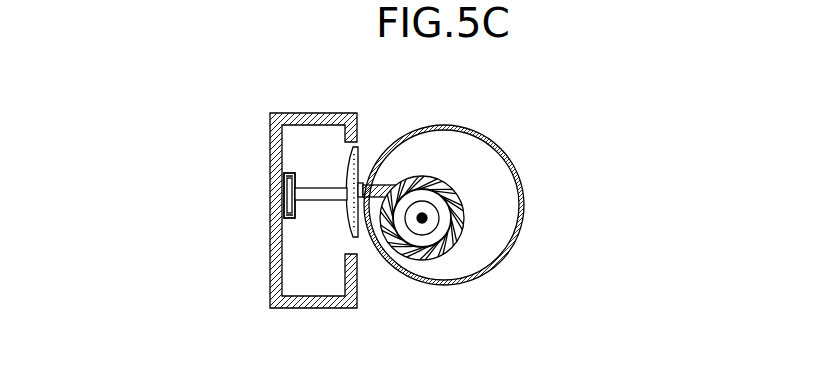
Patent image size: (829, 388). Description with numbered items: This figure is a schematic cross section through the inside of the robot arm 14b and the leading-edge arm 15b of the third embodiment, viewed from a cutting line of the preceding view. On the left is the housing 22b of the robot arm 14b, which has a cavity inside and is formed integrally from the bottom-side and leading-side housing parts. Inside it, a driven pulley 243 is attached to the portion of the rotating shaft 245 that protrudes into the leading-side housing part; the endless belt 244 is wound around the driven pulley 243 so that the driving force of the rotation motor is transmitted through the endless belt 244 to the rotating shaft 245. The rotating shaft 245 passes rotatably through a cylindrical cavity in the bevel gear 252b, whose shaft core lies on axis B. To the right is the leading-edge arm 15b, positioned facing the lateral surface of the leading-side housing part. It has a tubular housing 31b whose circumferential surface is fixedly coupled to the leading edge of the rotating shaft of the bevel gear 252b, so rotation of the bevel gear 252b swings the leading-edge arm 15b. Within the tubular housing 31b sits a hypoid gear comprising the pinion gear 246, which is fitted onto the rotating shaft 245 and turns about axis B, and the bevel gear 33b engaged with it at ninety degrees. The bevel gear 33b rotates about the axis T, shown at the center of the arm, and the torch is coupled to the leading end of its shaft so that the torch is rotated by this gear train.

The leading-edge arm 15b is at (143, 145).
The housing 22b is at (307, 113).
The bevel gear 252b is at (347, 163).
The driven pulley 243 is at (290, 188).
The endless belt 244 is at (290, 220).
The rotating shaft 245 is at (318, 200).
The pinion gear 246 is at (383, 187).
The robot arm 14b is at (534, 119).
The tubular housing 31b is at (523, 212).
The bevel gear 33b is at (423, 261).
The axis T is at (422, 218).